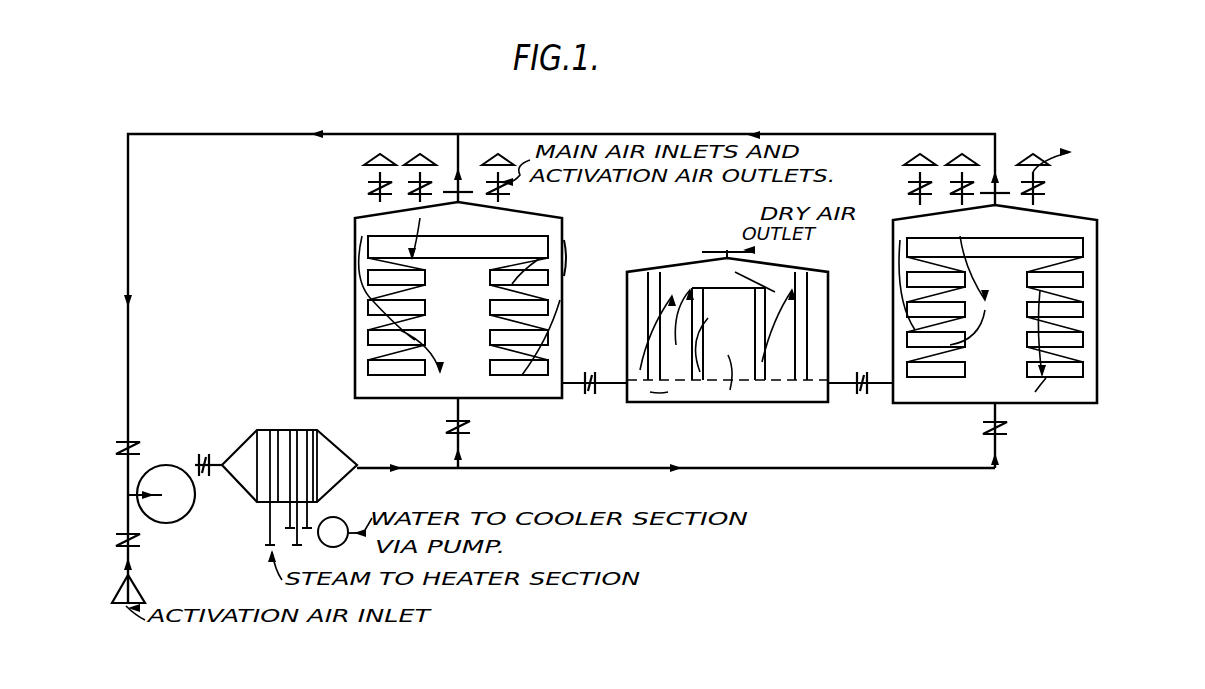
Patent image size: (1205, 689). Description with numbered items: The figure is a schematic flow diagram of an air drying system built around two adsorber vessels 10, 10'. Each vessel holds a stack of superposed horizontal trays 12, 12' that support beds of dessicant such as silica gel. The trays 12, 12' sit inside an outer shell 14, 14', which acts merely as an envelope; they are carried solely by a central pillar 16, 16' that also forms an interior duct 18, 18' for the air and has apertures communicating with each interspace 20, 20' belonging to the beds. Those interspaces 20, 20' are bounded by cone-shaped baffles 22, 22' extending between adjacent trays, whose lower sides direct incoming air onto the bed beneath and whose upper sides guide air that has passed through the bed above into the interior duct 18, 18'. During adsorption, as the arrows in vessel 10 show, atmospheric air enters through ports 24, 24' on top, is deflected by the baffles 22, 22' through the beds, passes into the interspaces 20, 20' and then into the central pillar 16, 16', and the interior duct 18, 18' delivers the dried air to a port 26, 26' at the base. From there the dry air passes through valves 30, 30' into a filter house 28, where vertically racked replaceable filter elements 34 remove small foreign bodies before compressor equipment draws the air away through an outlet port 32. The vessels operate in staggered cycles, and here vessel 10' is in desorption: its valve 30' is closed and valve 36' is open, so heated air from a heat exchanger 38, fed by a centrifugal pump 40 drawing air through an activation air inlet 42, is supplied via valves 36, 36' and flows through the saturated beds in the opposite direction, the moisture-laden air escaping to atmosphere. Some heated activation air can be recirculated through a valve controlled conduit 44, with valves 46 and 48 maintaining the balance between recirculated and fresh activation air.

The adsorber vessel 10 is at (420, 300).
The horizontal trays 12 is at (355, 322).
The outer shell 14 is at (566, 310).
The central pillar 16 is at (405, 280).
The interior duct 18 is at (456, 317).
The interspace 20 is at (347, 320).
The cone-shaped baffles 22 is at (552, 322).
The ports 24 is at (458, 125).
The port 26 is at (567, 410).
The filter house 28 is at (745, 320).
The valve 30 is at (727, 414).
The outlet port 32 is at (727, 252).
The filter elements 34 is at (800, 290).
The valve 36 is at (425, 433).
The heat exchanger 38 is at (300, 430).
The centrifugal pump 40 is at (180, 508).
The activation air inlet 42 is at (136, 592).
The valve controlled conduit 44 is at (222, 134).
The valve 46 is at (115, 448).
The valve 48 is at (115, 540).
The adsorber vessel 10' is at (1016, 287).
The horizontal trays 12' is at (1095, 324).
The outer shell 14' is at (1131, 250).
The central pillar 16' is at (1002, 271).
The interior duct 18' is at (993, 310).
The interspace 20' is at (904, 324).
The cone-shaped baffles 22' is at (1123, 290).
The ports 24' is at (988, 128).
The port 26' is at (885, 411).
The valve 30' is at (825, 422).
The valve 36' is at (1036, 435).